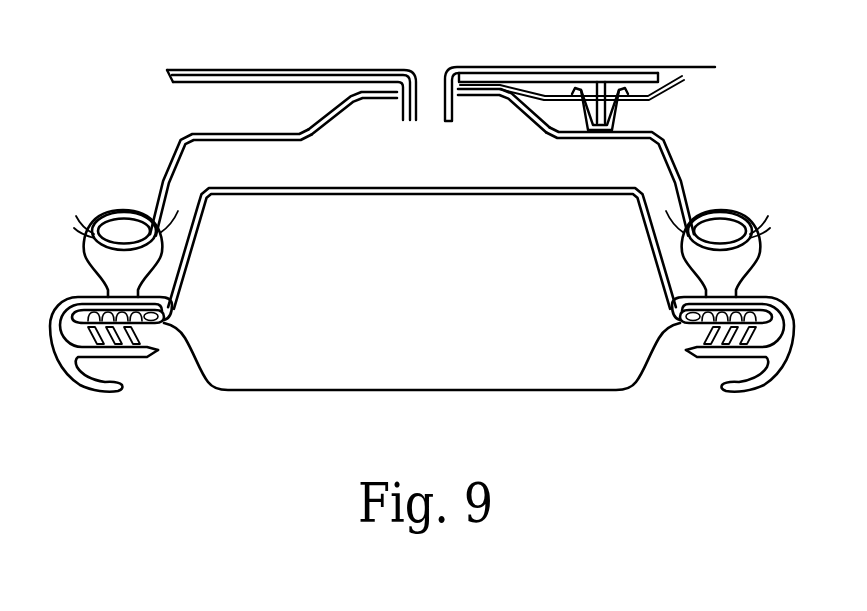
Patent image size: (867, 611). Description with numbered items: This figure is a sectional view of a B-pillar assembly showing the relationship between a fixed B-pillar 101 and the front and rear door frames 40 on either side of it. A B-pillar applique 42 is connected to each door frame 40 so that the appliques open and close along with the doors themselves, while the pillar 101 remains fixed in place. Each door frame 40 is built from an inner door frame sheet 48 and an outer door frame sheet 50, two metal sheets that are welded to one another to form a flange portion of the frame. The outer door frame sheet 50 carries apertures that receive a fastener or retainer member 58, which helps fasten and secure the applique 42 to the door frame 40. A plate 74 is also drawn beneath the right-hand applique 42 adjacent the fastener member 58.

The door frame 40 is at (255, 142).
The B-pillar applique 42 is at (240, 68).
The inner door frame sheet 48 is at (328, 118).
The outer door frame sheet 50 is at (193, 84).
The fastener member 58 is at (617, 117).
The plate 74 is at (567, 78).
The fixed B-pillar 101 is at (520, 193).